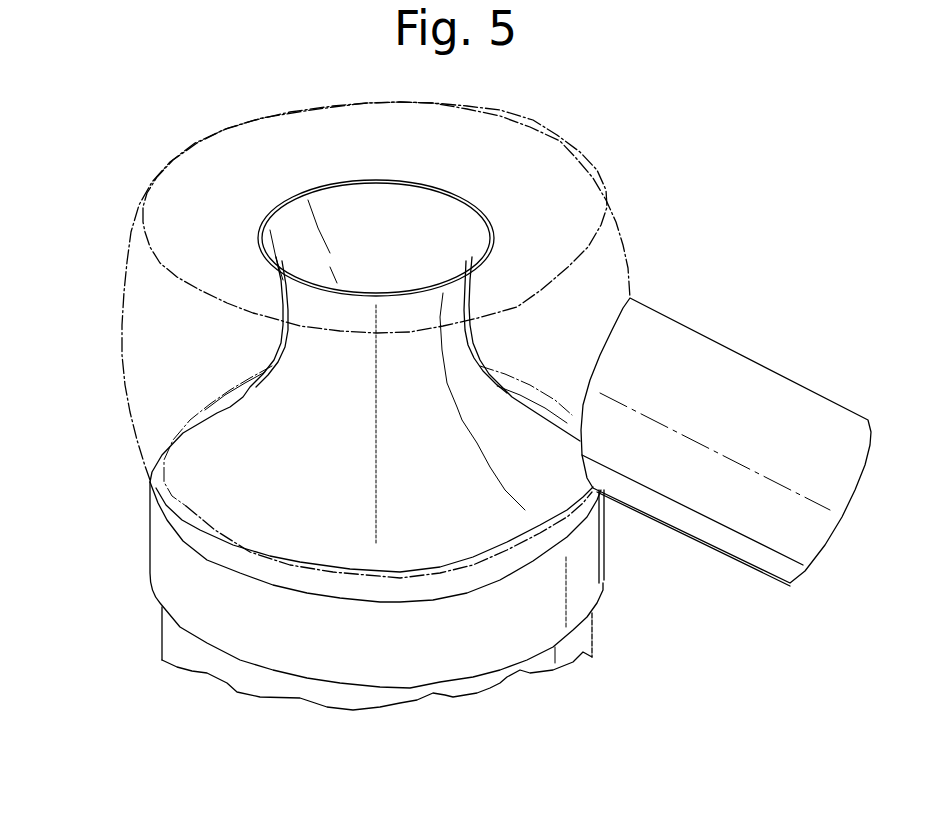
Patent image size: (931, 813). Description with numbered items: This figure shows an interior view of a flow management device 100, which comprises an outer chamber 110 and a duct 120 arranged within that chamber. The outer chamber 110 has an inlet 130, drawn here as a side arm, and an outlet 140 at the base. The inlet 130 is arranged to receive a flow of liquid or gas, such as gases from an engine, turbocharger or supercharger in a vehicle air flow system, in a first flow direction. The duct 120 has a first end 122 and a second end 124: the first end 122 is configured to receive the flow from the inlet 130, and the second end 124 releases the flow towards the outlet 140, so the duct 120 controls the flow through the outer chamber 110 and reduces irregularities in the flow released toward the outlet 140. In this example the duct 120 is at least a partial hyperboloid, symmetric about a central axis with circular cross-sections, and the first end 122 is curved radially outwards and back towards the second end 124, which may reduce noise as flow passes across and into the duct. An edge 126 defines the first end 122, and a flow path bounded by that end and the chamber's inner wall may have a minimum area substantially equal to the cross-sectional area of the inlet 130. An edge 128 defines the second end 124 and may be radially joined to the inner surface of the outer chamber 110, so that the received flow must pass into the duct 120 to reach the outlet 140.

The flow management device 100 is at (660, 178).
The outer chamber 110 is at (128, 384).
The duct 120 is at (303, 308).
The first end 122 is at (488, 199).
The second end 124 is at (190, 532).
The edge 126 is at (300, 197).
The edge 128 is at (222, 538).
The inlet 130 is at (740, 385).
The outlet 140 is at (604, 569).